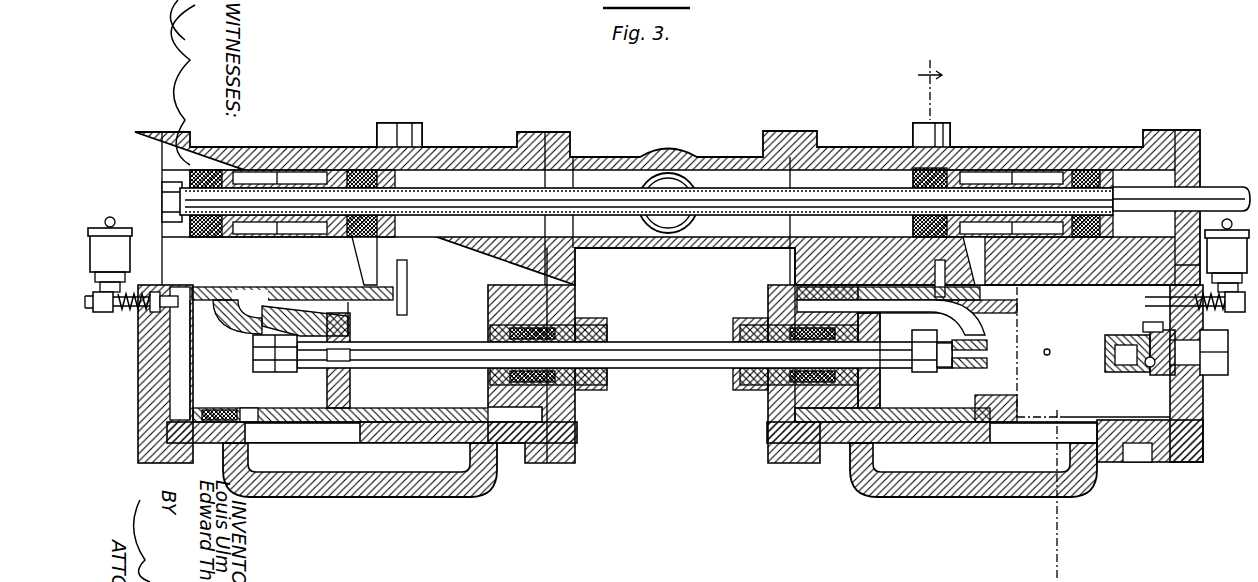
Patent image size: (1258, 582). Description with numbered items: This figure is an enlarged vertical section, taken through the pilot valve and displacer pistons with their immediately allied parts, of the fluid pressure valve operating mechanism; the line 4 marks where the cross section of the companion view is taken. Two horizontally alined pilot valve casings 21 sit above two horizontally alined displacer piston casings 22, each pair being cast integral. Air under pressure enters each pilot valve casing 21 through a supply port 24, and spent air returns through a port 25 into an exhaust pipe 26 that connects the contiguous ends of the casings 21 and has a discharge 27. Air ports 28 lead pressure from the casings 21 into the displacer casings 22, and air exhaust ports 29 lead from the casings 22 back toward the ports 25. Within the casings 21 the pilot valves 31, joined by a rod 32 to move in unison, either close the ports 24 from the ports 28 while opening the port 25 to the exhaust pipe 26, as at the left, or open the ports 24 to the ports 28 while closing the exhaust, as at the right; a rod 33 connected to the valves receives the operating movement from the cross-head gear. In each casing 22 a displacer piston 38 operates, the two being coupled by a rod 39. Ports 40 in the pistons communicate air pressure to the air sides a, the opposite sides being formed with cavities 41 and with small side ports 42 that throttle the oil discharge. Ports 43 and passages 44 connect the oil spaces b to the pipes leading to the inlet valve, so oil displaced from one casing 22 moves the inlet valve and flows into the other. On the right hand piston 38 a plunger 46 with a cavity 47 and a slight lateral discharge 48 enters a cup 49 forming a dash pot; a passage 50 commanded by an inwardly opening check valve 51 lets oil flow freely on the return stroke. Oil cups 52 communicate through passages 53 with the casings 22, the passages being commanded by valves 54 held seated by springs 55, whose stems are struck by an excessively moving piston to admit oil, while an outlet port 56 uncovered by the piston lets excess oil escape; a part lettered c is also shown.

The pilot valve casing 21 is at (487, 150).
The displacer piston casing 22 is at (576, 293).
The supply port 24 is at (297, 178).
The return port 25 is at (420, 150).
The exhaust pipe 26 is at (616, 195).
The discharge 27 is at (668, 178).
The air port 28 is at (669, 261).
The air exhaust port 29 is at (405, 300).
The pilot valve 31 is at (322, 185).
The rod 32 is at (722, 200).
The rod 33 is at (1218, 195).
The displacer piston 38 is at (350, 378).
The rod 39 is at (678, 357).
The port 40 is at (588, 311).
The cavity 41 is at (576, 360).
The port 42 is at (250, 410).
The port 43 is at (685, 440).
The passage 44 is at (660, 470).
The plunger 46 is at (978, 362).
The cavity 47 is at (1047, 352).
The discharge 48 is at (963, 347).
The cup 49 is at (1110, 368).
The passage 50 is at (1152, 370).
The check valve 51 is at (1205, 348).
The oil cup 52 is at (673, 336).
The passage 53 is at (106, 311).
The valve 54 is at (175, 303).
The spring 55 is at (100, 310).
The outlet port 56 is at (392, 330).
The air side a is at (348, 318).
The oil space b is at (654, 374).
The socket c is at (338, 354).
The section line 4— 4 is at (990, 306).